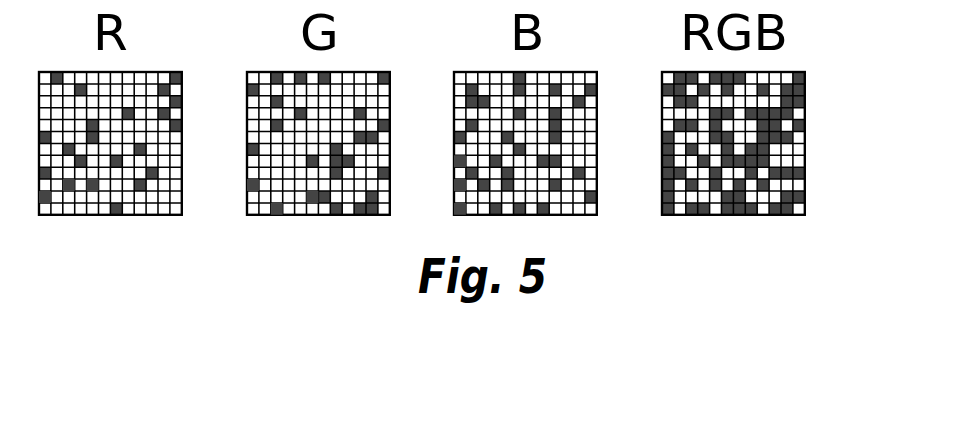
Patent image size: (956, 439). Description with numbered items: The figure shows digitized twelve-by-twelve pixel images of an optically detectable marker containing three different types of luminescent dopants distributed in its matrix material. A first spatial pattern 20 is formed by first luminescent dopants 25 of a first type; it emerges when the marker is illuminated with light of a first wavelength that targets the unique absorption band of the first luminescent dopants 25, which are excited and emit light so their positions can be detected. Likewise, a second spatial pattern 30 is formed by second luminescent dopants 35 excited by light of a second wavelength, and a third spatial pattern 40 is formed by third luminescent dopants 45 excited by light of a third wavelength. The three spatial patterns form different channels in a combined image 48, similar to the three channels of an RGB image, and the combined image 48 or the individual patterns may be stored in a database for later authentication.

The first spatial pattern 20 is at (123, 234).
The first luminescent dopants 25 is at (92, 190).
The second spatial pattern 30 is at (320, 231).
The second luminescent dopants 35 is at (312, 196).
The third spatial pattern 40 is at (609, 222).
The third luminescent dopants 45 is at (460, 208).
The combined image 48 is at (832, 146).